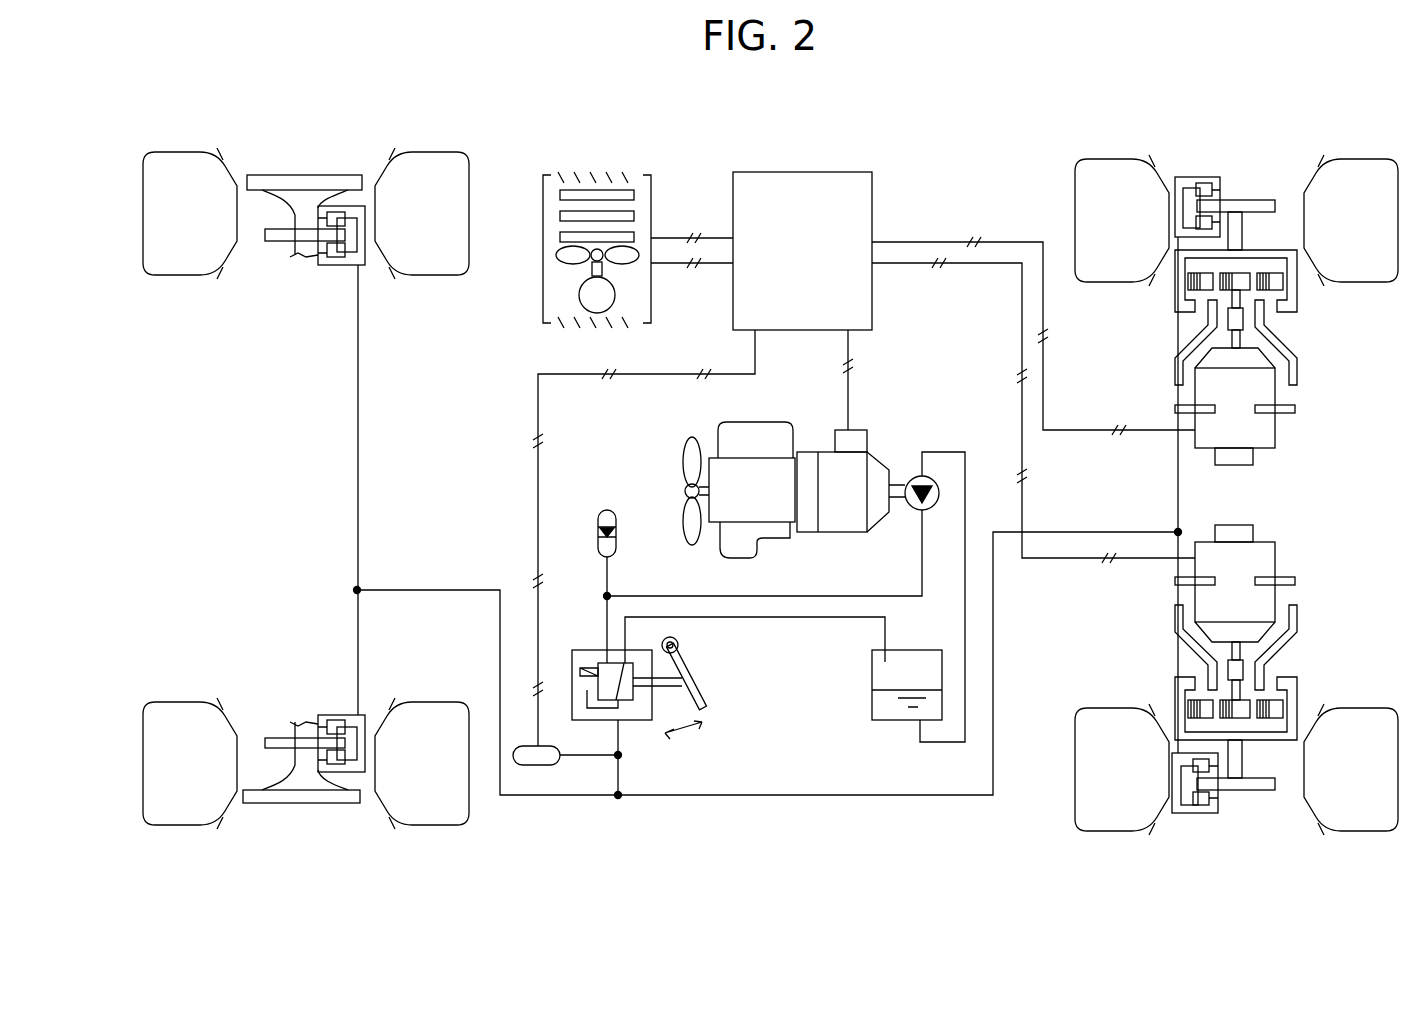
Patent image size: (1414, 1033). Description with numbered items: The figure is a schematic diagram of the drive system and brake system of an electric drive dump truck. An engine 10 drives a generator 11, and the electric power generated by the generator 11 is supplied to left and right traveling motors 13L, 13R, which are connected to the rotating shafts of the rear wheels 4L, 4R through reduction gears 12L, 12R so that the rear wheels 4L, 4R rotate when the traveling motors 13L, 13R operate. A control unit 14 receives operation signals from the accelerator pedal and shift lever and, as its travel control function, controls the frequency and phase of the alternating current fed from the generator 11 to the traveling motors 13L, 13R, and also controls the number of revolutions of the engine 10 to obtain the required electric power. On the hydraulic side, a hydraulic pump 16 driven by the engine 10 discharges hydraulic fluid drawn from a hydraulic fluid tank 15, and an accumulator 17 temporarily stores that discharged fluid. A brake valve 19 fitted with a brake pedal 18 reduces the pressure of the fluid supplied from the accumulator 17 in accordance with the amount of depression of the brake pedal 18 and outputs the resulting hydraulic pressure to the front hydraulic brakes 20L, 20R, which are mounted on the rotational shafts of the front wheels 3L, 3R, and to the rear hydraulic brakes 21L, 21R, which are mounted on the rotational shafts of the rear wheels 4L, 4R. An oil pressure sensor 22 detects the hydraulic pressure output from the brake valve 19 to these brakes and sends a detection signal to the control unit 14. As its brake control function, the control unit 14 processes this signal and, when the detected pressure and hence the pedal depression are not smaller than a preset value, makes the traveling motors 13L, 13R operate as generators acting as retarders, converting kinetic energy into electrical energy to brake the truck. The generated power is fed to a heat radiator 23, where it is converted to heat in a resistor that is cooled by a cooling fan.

The front wheel 3R is at (175, 150).
The front wheel 3L is at (175, 827).
The rear wheel 4R is at (1372, 158).
The rear wheel 4L is at (1358, 833).
The front hydraulic brake 20R is at (342, 205).
The front hydraulic brake 20L is at (340, 805).
The rear hydraulic brake 21R is at (1197, 177).
The rear hydraulic brake 21L is at (1193, 813).
The reduction gear 12R is at (1286, 250).
The reduction gear 12L is at (1282, 742).
The traveling motor 13R is at (1275, 430).
The traveling motor 13L is at (1275, 553).
The engine 10 is at (770, 540).
The generator 11 is at (845, 533).
The control unit 14 is at (802, 172).
The hydraulic fluid tank 15 is at (872, 668).
The hydraulic pump 16 is at (912, 478).
The accumulator 17 is at (606, 510).
The brake pedal 18 is at (686, 660).
The brake valve 19 is at (640, 720).
The oil pressure sensor 22 is at (535, 765).
The heat radiator 23 is at (596, 175).